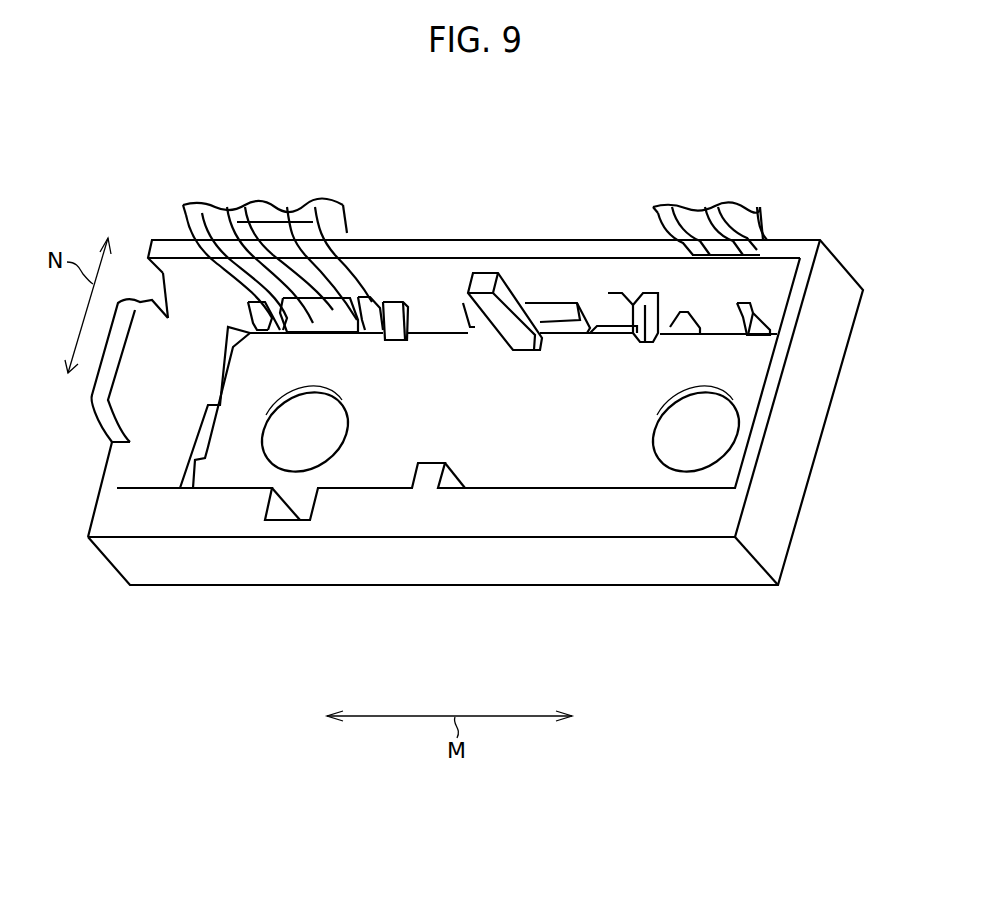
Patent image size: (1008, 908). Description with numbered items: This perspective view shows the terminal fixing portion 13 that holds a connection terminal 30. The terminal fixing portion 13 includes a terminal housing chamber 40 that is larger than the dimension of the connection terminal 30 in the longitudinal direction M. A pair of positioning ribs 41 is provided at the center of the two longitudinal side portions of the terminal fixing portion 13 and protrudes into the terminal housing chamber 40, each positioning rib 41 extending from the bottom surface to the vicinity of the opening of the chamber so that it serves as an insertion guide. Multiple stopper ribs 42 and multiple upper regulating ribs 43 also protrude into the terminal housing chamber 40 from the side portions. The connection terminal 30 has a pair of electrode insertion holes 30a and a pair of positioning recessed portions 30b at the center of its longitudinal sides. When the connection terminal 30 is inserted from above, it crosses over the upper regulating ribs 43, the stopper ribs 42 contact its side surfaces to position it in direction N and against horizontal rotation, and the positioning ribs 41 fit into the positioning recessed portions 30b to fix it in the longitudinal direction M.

The terminal fixing portion 13 is at (452, 236).
The connection terminal 30 is at (553, 432).
The electrode insertion hole 30a is at (278, 425).
The positioning recessed portion 30b is at (520, 350).
The terminal housing chamber 40 is at (368, 470).
The positioning rib 41 is at (484, 282).
The stopper rib 42 is at (362, 330).
The upper regulating rib 43 is at (395, 320).